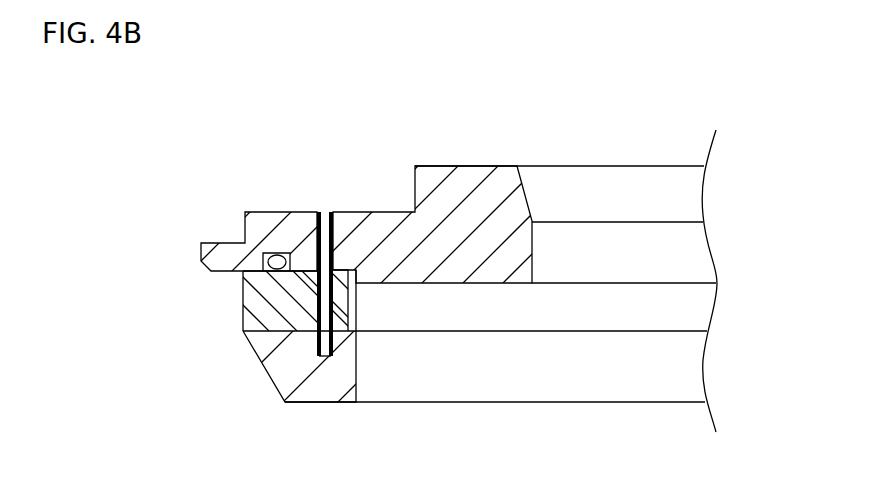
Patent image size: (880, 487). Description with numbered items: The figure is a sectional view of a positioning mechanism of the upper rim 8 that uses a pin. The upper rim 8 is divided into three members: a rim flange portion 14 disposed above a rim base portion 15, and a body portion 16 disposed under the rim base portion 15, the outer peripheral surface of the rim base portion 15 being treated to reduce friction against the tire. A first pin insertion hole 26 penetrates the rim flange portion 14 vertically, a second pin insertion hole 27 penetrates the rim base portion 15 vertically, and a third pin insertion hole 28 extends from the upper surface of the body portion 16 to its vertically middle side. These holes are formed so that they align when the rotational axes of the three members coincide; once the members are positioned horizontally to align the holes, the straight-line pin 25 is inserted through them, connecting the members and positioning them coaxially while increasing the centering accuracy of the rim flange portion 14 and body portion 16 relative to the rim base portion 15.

The upper rim 8 is at (166, 227).
The rim flange portion 14 is at (262, 216).
The rim base portion 15 is at (257, 297).
The body portion 16 is at (265, 344).
The pin 25 is at (322, 230).
The first pin insertion hole 26 is at (319, 214).
The second pin insertion hole 27 is at (320, 318).
The third pin insertion hole 28 is at (327, 356).